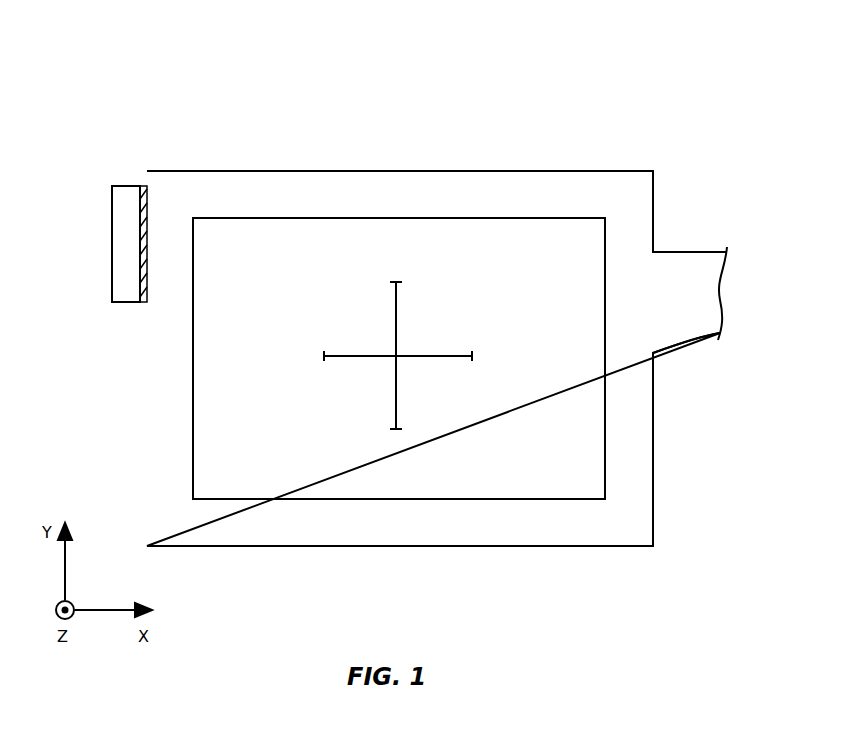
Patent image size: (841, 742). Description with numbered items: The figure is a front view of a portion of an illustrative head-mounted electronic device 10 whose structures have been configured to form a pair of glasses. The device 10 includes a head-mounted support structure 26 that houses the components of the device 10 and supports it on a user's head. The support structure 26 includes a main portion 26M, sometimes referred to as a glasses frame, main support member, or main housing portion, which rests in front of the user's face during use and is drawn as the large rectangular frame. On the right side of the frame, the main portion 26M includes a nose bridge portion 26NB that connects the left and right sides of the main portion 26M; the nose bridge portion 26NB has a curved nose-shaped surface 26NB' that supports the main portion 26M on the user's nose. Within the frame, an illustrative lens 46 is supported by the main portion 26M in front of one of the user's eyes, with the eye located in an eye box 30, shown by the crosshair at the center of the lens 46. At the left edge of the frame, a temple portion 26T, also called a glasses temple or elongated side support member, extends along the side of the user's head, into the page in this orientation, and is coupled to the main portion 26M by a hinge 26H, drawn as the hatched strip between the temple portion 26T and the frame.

The electronic device 10 is at (619, 104).
The head-mounted support structure 26 is at (212, 171).
The nose bridge portion 26NB is at (690, 265).
The curved nose-shaped surface 26NB' is at (686, 368).
The main portion 26M is at (335, 546).
The lens 46 is at (511, 480).
The eye box 30 is at (393, 424).
The temple portion 26T is at (121, 253).
The hinge 26H is at (143, 303).